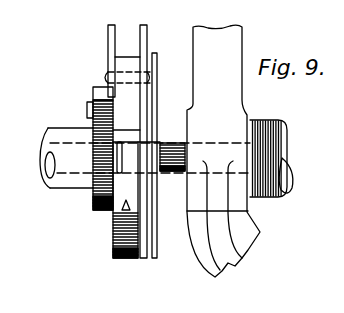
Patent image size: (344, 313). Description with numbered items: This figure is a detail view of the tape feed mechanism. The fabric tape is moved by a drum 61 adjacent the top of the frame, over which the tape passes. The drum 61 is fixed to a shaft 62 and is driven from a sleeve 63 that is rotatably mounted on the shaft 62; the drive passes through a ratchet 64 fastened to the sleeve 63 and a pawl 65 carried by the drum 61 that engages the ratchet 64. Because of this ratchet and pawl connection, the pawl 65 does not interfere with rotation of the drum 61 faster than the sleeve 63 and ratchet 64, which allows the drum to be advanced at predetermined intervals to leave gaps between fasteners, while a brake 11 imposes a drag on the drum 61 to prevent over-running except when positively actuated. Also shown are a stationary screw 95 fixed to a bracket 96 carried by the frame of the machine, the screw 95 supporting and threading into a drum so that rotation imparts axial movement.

The frame plate 11 is at (133, 103).
The drum 61 is at (142, 248).
The shaft 62 is at (168, 142).
The sleeve 63 is at (60, 182).
The ratchet 64 is at (92, 200).
The pawl 65 is at (93, 89).
The stationary screw 95 is at (270, 197).
The bracket 96 is at (240, 93).